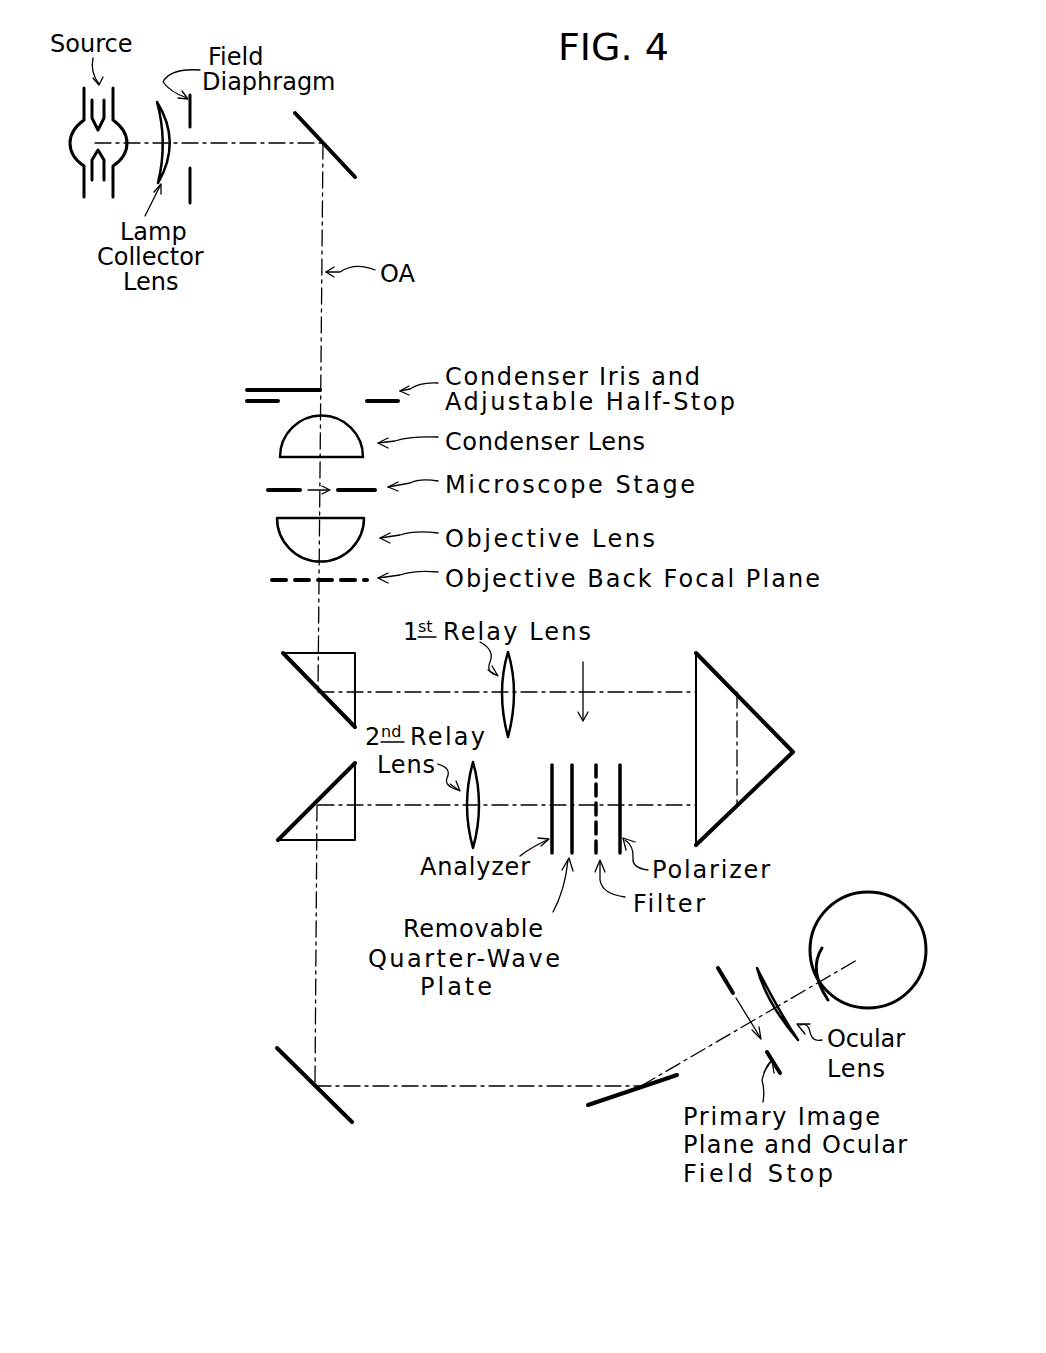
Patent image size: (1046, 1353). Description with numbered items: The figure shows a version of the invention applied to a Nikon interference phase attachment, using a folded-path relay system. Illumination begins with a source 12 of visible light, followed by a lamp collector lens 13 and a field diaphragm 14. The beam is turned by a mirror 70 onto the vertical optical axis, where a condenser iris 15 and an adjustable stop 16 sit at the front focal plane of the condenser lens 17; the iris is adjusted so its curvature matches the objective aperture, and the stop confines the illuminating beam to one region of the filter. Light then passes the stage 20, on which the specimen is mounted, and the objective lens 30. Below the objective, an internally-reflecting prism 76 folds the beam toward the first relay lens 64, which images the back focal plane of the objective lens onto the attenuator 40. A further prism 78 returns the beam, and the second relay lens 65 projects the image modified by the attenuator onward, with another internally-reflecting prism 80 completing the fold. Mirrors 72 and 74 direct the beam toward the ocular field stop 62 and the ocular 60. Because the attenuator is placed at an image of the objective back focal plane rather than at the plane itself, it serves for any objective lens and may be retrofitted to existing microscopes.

The source 12 is at (78, 174).
The lamp collector lens 13 is at (161, 156).
The field diaphragm 14 is at (192, 190).
The mirror 70 is at (326, 138).
The adjustable stop 16 is at (258, 389).
The condenser iris 15 is at (262, 400).
The condenser lens 17 is at (283, 443).
The stage 20 is at (278, 492).
The objective lens 30 is at (293, 531).
The internally-reflecting prism 76 is at (302, 680).
The first relay lens 64 is at (500, 709).
The prism 78 is at (760, 718).
The internally-reflecting prism 80 is at (296, 824).
The second relay lens 65 is at (468, 821).
The attenuator 40 is at (628, 764).
The mirror 72 is at (300, 1073).
The mirror 74 is at (607, 1104).
The ocular field stop 62 is at (720, 982).
The ocular 60 is at (770, 982).